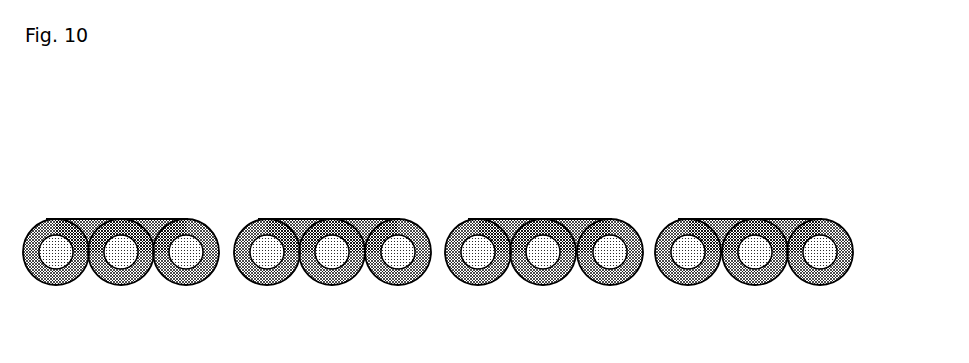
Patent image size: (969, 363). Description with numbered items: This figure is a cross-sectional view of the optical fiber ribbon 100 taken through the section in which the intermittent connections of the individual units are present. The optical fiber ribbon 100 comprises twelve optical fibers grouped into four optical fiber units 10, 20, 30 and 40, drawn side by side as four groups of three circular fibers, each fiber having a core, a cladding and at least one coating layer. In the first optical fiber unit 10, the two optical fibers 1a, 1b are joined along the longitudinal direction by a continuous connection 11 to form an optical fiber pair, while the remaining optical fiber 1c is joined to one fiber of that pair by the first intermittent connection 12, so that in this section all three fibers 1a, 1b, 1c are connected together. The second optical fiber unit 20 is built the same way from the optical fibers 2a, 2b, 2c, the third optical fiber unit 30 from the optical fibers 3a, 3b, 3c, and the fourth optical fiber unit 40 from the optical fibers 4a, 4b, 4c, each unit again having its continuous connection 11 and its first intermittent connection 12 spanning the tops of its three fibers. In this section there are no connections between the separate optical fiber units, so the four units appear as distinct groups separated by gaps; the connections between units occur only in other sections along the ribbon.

The optical fiber ribbon 100 is at (414, 120).
The first optical fiber unit 10 is at (178, 203).
The second optical fiber unit 20 is at (272, 203).
The third optical fiber unit 30 is at (601, 203).
The fourth optical fiber unit 40 is at (695, 203).
The continuous connection 11 is at (82, 216).
The first intermittent connection 12 is at (153, 221).
The optical fiber 1a is at (46, 286).
The optical fiber 1b is at (112, 286).
The optical fiber 1c is at (173, 286).
The optical fiber 2a is at (263, 286).
The optical fiber 2b is at (331, 286).
The optical fiber 2c is at (394, 286).
The optical fiber 3a is at (613, 286).
The optical fiber 3b is at (549, 286).
The optical fiber 3c is at (483, 286).
The optical fiber 4a is at (823, 286).
The optical fiber 4b is at (763, 286).
The optical fiber 4c is at (694, 286).